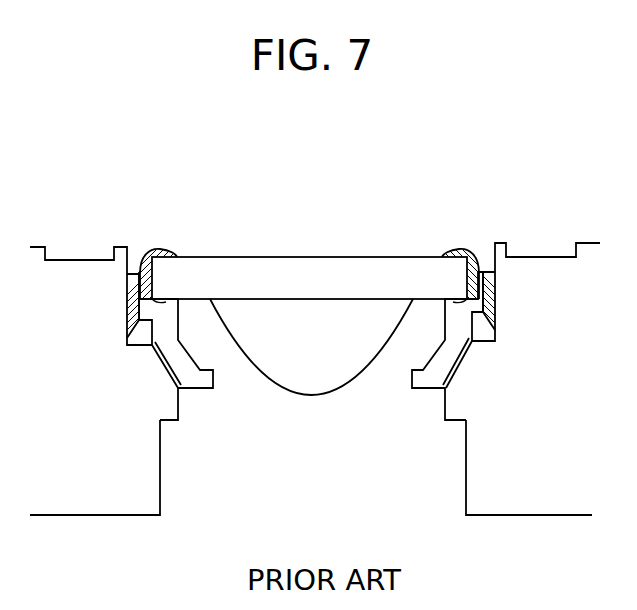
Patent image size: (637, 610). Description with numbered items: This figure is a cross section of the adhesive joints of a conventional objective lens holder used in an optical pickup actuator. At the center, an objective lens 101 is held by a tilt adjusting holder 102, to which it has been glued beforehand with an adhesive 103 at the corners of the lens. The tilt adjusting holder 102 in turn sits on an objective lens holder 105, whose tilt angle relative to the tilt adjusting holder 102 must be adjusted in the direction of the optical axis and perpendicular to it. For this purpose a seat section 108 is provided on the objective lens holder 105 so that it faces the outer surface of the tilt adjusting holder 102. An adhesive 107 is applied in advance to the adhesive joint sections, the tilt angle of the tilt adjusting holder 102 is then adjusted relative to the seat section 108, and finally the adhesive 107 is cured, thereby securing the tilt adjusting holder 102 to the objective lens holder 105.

The objective lens 101 is at (346, 270).
The tilt adjusting holder 102 is at (183, 373).
The adhesive 103 is at (146, 250).
The objective lens holder 105 is at (311, 467).
The adhesive 107 is at (128, 287).
The seat section 108 is at (158, 367).